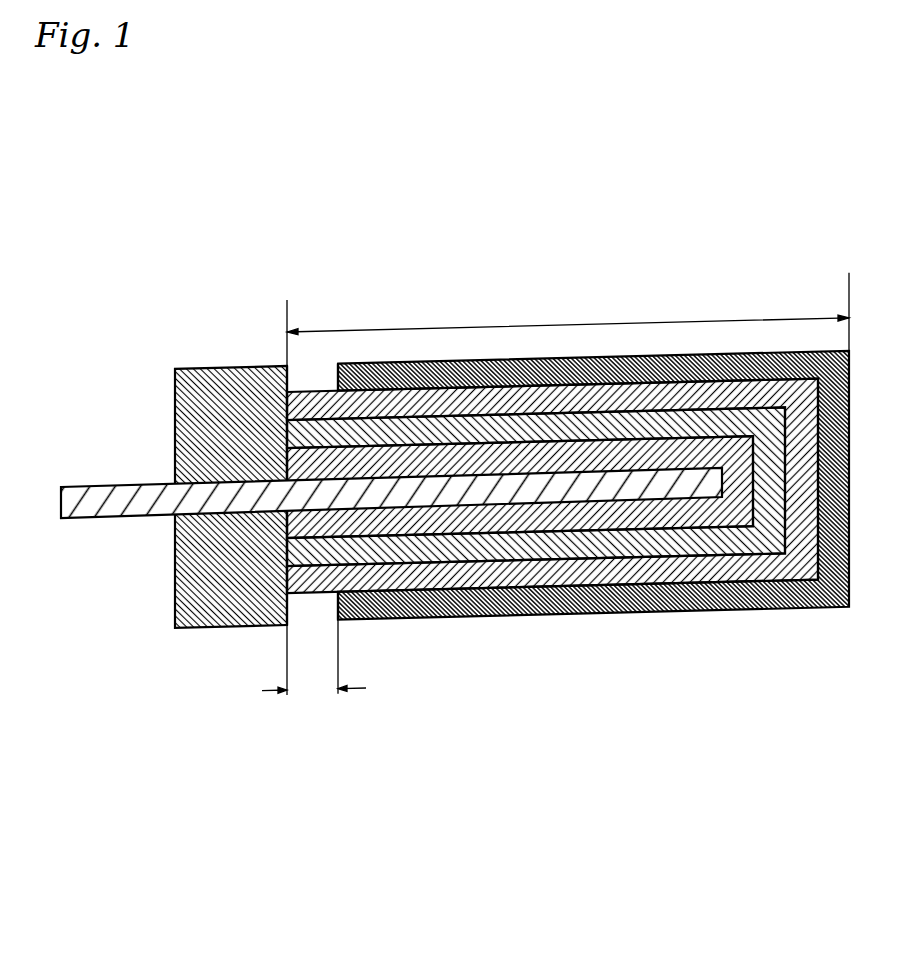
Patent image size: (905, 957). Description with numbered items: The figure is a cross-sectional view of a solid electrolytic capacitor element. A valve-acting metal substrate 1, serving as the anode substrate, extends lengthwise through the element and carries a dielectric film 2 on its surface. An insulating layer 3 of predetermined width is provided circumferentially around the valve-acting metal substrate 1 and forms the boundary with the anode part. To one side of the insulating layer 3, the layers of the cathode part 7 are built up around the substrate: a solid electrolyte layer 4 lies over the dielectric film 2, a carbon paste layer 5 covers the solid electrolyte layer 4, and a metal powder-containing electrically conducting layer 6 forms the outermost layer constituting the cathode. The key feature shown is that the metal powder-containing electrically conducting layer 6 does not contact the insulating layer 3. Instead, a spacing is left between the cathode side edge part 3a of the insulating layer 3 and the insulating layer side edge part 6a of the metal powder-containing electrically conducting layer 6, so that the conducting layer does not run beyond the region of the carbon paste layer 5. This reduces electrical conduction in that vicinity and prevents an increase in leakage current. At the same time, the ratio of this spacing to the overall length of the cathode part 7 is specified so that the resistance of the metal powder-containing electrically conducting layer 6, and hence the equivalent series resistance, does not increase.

The valve-acting metal substrate 1 is at (113, 518).
The dielectric film 2 is at (525, 517).
The insulating layer 3 is at (203, 600).
The cathode side edge part of the insulating layer 3a is at (287, 627).
The solid electrolyte layer 4 is at (653, 545).
The carbon paste layer 5 is at (325, 388).
The metal powder-containing electrically conducting layer 6 is at (397, 382).
The insulating layer side edge part of the metal powder-containing electrically cond 6a is at (340, 623).
The cathode part 7 is at (725, 287).